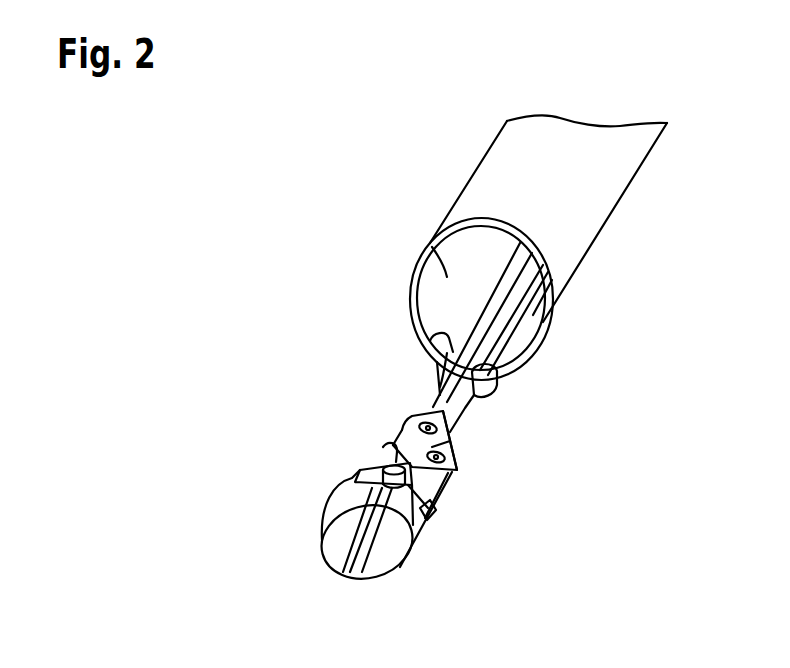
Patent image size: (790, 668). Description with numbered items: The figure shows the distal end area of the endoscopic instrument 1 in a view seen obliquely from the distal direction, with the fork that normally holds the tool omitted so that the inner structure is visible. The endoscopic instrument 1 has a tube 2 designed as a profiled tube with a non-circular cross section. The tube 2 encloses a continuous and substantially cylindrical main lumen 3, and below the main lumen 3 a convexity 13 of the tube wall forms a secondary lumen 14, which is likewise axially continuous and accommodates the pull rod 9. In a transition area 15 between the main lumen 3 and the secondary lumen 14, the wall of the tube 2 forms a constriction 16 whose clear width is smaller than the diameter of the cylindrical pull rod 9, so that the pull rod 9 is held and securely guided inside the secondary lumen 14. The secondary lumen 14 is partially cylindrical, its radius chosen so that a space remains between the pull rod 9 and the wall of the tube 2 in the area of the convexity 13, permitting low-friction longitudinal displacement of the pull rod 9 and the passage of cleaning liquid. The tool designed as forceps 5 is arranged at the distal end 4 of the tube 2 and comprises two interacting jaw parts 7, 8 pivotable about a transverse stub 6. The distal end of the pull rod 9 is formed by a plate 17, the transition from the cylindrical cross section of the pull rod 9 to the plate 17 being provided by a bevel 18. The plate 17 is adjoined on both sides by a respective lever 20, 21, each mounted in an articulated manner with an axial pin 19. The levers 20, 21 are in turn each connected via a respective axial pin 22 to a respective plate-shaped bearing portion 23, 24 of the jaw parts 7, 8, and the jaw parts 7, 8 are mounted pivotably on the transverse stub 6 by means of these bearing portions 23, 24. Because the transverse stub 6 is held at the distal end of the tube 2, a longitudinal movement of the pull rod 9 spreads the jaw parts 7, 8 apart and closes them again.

The endoscopic instrument 1 is at (305, 183).
The tube 2 is at (597, 218).
The main lumen 3 is at (430, 245).
The distal end 4 is at (345, 287).
The forceps 5 is at (258, 453).
The transverse stub 6 is at (360, 470).
The jaw part 7 is at (340, 543).
The jaw part 8 is at (388, 553).
The pull rod 9 is at (510, 308).
The convexity 13 is at (465, 408).
The secondary lumen 14 is at (433, 377).
The transition area 15 is at (430, 341).
The constriction 16 is at (497, 380).
The plate 17 is at (398, 445).
The bevel 18 is at (440, 440).
The axial pin 19 is at (450, 462).
The lever 20 is at (377, 447).
The lever 21 is at (452, 462).
The axial pin 22 is at (458, 460).
The bearing portion 23 is at (358, 480).
The bearing portion 24 is at (430, 520).